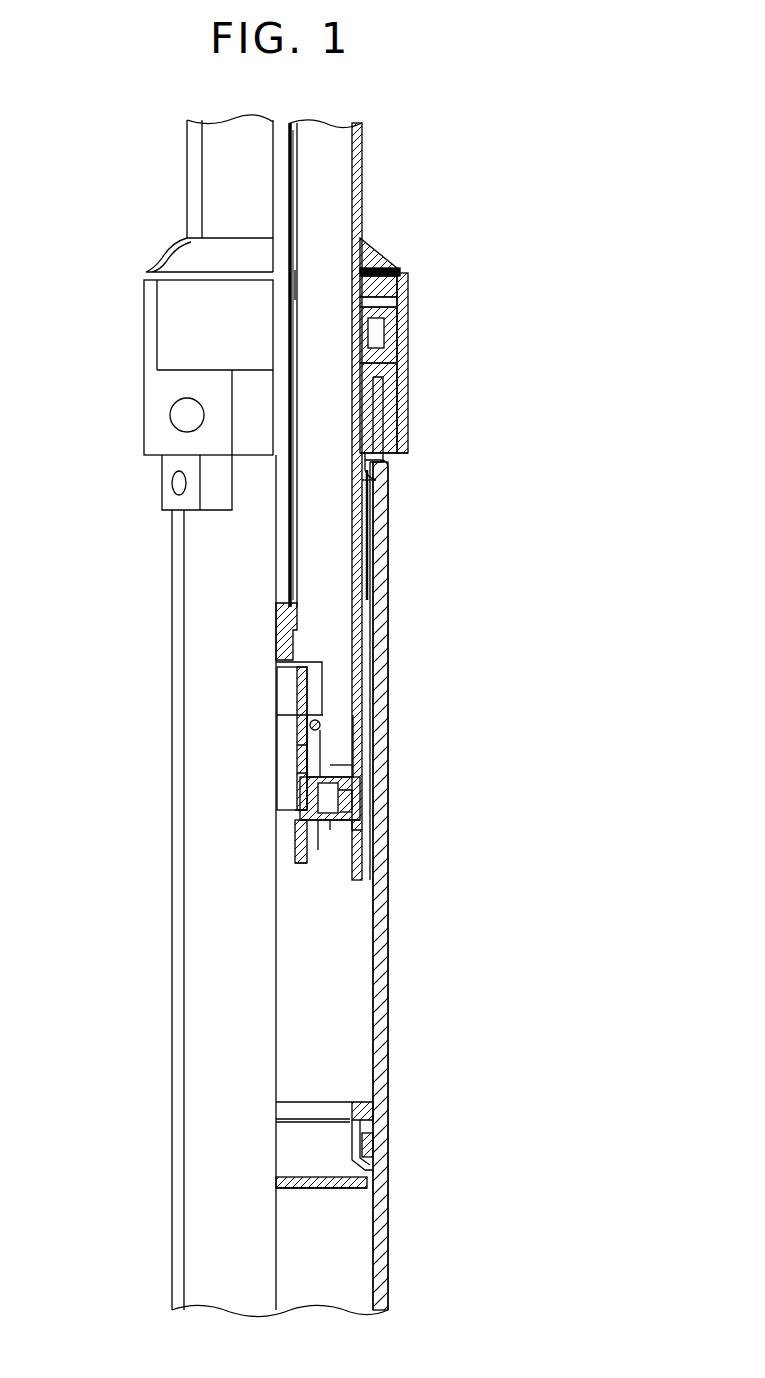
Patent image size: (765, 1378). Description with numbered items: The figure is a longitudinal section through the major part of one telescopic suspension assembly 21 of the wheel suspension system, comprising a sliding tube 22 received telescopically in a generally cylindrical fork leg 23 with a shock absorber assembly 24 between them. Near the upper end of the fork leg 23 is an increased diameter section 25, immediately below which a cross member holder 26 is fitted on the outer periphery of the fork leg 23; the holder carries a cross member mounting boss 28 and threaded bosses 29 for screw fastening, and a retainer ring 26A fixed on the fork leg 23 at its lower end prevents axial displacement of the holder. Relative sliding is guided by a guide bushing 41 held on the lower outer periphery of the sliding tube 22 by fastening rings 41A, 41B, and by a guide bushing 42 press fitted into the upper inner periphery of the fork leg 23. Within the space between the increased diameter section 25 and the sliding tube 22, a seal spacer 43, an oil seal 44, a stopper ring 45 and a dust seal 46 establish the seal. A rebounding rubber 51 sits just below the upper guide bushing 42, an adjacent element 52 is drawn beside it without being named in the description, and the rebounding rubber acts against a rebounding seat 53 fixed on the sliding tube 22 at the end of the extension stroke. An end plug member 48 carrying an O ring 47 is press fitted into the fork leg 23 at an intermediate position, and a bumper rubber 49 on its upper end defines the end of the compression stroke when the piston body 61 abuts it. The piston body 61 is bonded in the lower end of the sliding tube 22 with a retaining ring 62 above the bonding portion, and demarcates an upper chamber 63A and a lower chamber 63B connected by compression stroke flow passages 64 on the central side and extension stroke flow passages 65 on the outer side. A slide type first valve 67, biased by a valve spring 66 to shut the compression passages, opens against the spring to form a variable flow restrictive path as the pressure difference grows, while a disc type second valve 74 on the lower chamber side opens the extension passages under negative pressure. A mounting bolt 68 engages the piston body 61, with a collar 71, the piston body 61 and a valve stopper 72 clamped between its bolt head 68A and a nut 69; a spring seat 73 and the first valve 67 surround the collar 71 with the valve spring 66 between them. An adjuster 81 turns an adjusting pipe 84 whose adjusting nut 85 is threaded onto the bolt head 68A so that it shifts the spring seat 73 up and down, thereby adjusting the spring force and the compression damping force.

The telescopic suspension assembly 21 is at (213, 188).
The sliding tube 22 is at (362, 150).
The fork leg 23 is at (383, 960).
The shock absorber assembly 24 is at (355, 752).
The increased diameter section 25 is at (410, 320).
The cross member holder 26 is at (390, 425).
The retainer ring 26A is at (388, 462).
The cross member mounting boss 28 is at (167, 430).
The threaded boss 29 is at (150, 510).
The guide bushing 41 is at (350, 780).
The fastening ring 41A is at (355, 705).
The fastening ring 41B is at (358, 810).
The guide bushing 42 is at (400, 400).
The seal spacer 43 is at (385, 348).
The oil seal 44 is at (380, 300).
The stopper ring 45 is at (395, 272).
The dust seal 46 is at (378, 250).
The O ring 47 is at (374, 1140).
The end plug member 48 is at (372, 1180).
The bumper rubber 49 is at (374, 1105).
The rebounding rubber 51 is at (385, 470).
The passage 52 is at (386, 520).
The rebounding seat 53 is at (378, 482).
The piston body 61 is at (350, 820).
The retaining ring 62 is at (355, 790).
The upper chamber 63A is at (333, 590).
The lower chamber 63B is at (352, 1040).
The compression stroke flow passage 64 is at (300, 815).
The extension stroke flow passage 65 is at (330, 830).
The valve spring 66 is at (340, 722).
The first valve 67 is at (340, 765).
The mounting bolt 68 is at (283, 853).
The bolt head 68A is at (280, 698).
The nut 69 is at (305, 865).
The collar 71 is at (297, 765).
The valve stopper 72 is at (318, 850).
The spring seat 73 is at (322, 722).
The second valve 74 is at (358, 830).
The adjuster 81 is at (312, 216).
The adjusting pipe 84 is at (306, 278).
The adjusting nut 85 is at (320, 663).